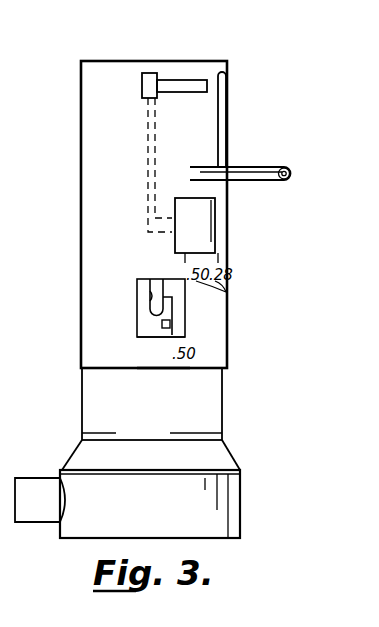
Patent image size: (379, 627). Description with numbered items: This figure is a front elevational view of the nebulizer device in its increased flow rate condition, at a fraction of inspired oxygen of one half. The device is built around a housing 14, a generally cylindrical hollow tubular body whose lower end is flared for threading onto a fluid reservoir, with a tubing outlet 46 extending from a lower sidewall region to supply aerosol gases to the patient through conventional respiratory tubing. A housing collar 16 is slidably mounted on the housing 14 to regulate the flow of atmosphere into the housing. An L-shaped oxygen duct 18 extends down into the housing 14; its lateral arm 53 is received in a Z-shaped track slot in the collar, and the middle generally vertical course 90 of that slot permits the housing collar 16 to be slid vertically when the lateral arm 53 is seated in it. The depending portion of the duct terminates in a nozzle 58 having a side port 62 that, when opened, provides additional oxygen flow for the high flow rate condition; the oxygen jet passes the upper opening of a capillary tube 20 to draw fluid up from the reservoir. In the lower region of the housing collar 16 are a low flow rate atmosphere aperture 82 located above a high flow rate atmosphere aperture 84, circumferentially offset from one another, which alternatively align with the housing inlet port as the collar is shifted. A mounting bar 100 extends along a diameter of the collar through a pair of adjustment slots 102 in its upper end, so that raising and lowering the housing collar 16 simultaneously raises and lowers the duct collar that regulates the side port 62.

The housing 14 is at (200, 407).
The housing collar 16 is at (96, 188).
The oxygen duct 18 is at (271, 167).
The capillary tube 20 is at (172, 316).
The tubing outlet 46 is at (38, 490).
The lateral arm 53 is at (246, 166).
The nozzle 58 is at (157, 287).
The side port 62 is at (151, 301).
The low flow rate atmosphere aperture 82 is at (206, 214).
The high flow rate atmosphere aperture 84 is at (163, 322).
The middle generally vertical course 90 is at (222, 94).
The mounting bar 100 is at (151, 351).
The adjustment slots 102 is at (176, 81).